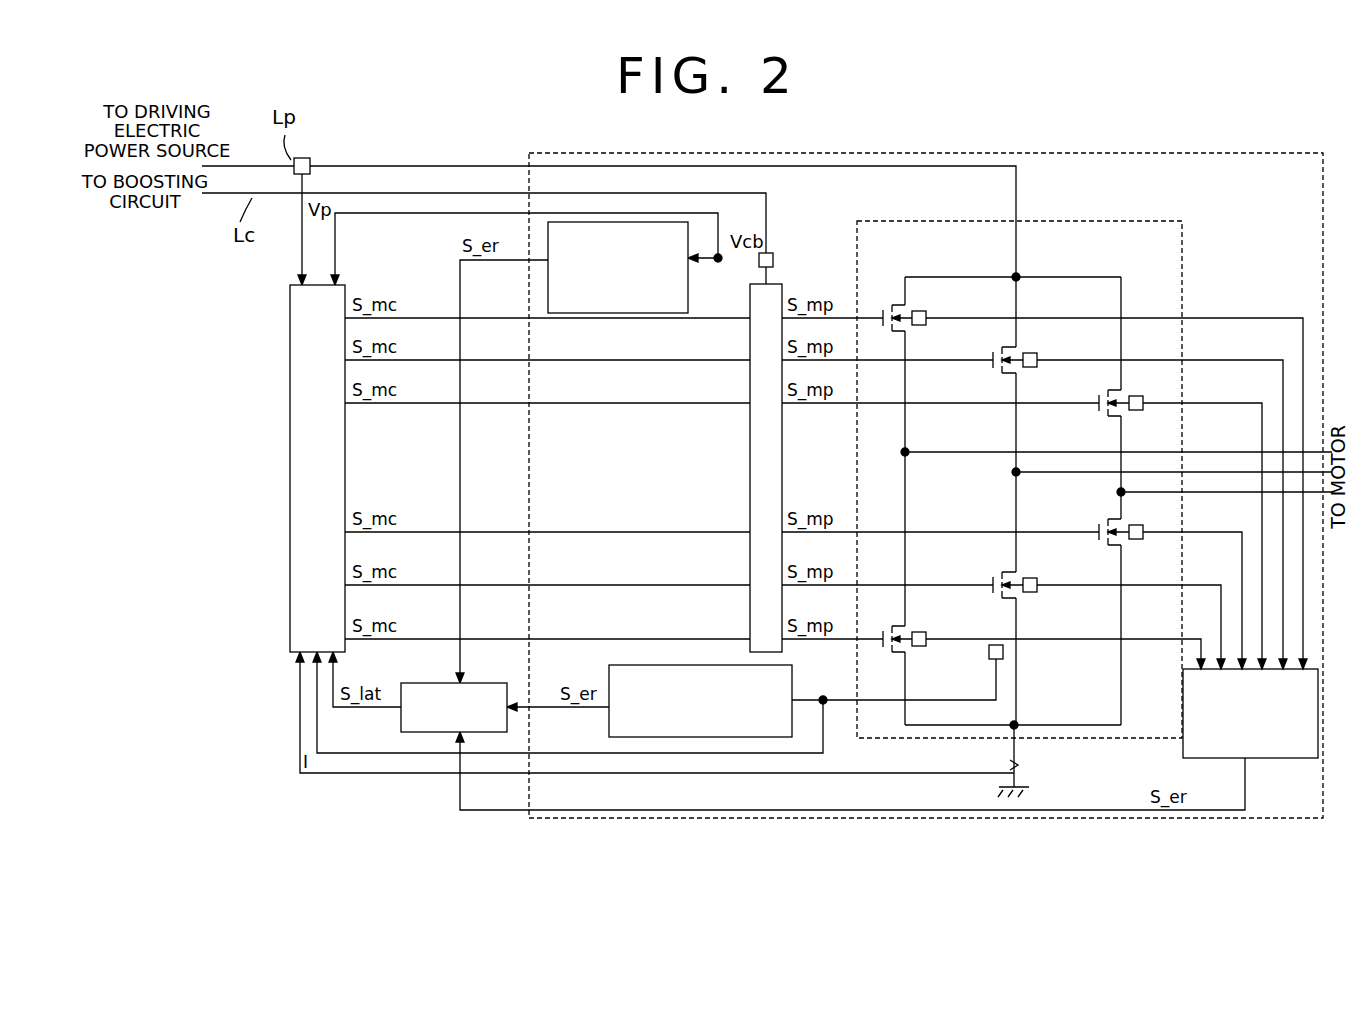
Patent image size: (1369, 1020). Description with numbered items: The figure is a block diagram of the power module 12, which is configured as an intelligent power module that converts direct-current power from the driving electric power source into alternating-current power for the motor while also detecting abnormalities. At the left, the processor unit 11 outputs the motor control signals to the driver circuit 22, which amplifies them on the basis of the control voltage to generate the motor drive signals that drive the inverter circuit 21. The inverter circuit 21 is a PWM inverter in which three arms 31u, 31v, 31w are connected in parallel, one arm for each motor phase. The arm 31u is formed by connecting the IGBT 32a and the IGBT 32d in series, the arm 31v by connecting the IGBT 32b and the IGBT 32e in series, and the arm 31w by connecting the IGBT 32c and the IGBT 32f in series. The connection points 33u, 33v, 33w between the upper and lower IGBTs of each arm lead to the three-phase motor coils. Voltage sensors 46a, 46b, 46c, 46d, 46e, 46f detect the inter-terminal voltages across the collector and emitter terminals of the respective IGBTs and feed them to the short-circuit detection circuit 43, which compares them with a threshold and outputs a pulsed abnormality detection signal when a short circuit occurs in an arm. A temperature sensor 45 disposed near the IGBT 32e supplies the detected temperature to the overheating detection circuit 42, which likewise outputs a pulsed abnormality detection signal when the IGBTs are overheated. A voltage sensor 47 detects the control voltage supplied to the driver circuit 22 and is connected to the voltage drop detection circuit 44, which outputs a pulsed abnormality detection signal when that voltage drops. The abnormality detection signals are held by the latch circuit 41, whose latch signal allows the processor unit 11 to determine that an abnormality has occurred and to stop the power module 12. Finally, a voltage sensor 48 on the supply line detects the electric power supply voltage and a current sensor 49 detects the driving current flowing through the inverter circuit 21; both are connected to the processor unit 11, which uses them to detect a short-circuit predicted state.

The processor unit 11 is at (286, 282).
The power module 12 is at (1182, 152).
The inverter circuit 21 is at (1053, 220).
The driver circuit 22 is at (780, 284).
The arm 31u is at (893, 268).
The arm 31v is at (998, 297).
The arm 31w is at (1148, 297).
The IGBT 32a is at (880, 299).
The IGBT 32b is at (993, 348).
The IGBT 32c is at (1098, 390).
The IGBT 32d is at (880, 650).
The IGBT 32e is at (990, 598).
The IGBT 32f is at (1098, 542).
The connection point 33u is at (907, 451).
The connection point 33v is at (1014, 472).
The connection point 33w is at (1119, 492).
The latch circuit 41 is at (494, 683).
The overheating detection circuit 42 is at (609, 720).
The short-circuit detection circuit 43 is at (1230, 758).
The voltage drop detection circuit 44 is at (688, 296).
The temperature sensor 45 is at (988, 654).
The voltage sensor 46a is at (921, 311).
The voltage sensor 46b is at (1032, 353).
The voltage sensor 46c is at (1136, 396).
The voltage sensor 46d is at (919, 646).
The voltage sensor 46e is at (1030, 592).
The voltage sensor 46f is at (1136, 539).
The voltage sensor 47 is at (769, 253).
The voltage sensor 48 is at (308, 158).
The current sensor 49 is at (1021, 764).